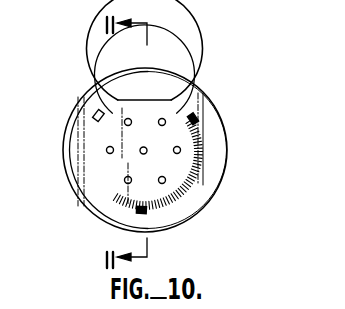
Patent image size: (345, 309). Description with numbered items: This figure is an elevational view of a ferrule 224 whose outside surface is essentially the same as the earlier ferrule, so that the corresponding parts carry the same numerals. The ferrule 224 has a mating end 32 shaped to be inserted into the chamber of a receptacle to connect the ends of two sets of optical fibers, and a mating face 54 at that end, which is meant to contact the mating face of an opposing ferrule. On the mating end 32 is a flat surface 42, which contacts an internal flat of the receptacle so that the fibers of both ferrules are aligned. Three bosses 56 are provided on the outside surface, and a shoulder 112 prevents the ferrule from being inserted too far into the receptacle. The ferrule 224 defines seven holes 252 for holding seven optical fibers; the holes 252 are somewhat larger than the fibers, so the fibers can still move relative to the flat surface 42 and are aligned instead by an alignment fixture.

The ferrule 224 is at (258, 67).
The shoulder 112 is at (188, 221).
The flat surface 42 is at (156, 101).
The mating face 54 is at (144, 107).
The mating end 32 is at (97, 183).
The bosses 56 is at (93, 116).
The holes 252 is at (140, 150).